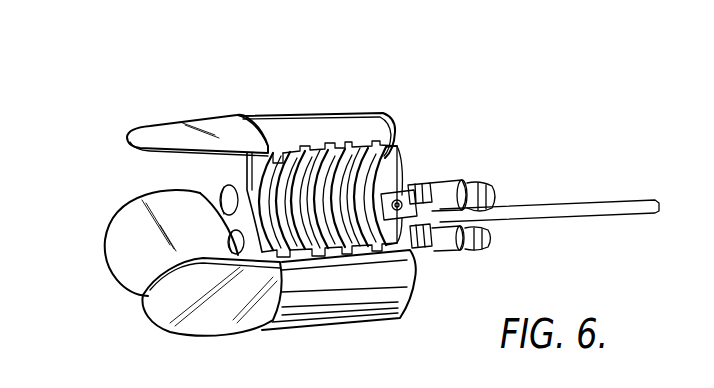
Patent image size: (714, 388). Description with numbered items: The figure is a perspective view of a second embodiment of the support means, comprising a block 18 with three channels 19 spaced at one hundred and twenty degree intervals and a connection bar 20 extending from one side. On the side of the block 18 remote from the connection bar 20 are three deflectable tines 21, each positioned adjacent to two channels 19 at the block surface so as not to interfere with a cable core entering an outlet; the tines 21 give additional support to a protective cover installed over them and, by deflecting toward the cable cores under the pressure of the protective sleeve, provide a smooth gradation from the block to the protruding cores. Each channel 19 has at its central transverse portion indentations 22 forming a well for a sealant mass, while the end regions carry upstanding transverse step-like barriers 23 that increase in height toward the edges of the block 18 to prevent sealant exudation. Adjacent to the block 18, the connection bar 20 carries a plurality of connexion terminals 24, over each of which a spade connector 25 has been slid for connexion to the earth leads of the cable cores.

The block 18 is at (315, 123).
The channels 19 is at (238, 176).
The connection bar 20 is at (596, 207).
The deflectable tines 21 is at (156, 130).
The indentations 22 is at (318, 142).
The step-like barriers 23 is at (283, 142).
The connexion terminals 24 is at (438, 202).
The spade connector 25 is at (484, 228).